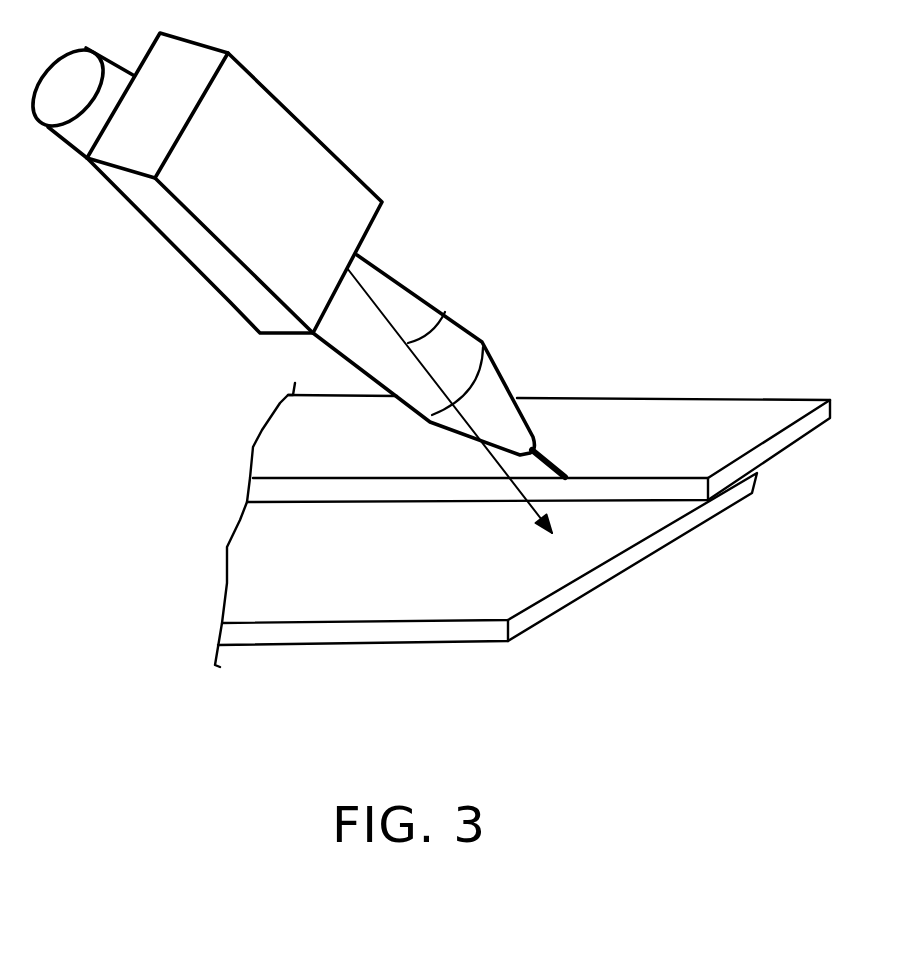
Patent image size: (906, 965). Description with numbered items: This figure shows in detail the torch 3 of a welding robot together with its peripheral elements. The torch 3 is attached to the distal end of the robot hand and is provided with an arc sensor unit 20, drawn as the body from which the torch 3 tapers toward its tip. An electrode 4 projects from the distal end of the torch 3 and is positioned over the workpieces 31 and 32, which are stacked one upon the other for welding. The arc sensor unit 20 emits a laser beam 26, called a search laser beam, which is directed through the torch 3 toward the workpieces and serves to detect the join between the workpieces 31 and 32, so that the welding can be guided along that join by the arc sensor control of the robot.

The arc sensor unit 20 is at (277, 97).
The torch 3 is at (385, 267).
The laser beam (search laser beam) 26 is at (443, 316).
The electrode 4 is at (553, 460).
The workpiece 31 is at (763, 398).
The workpiece 32 is at (553, 618).